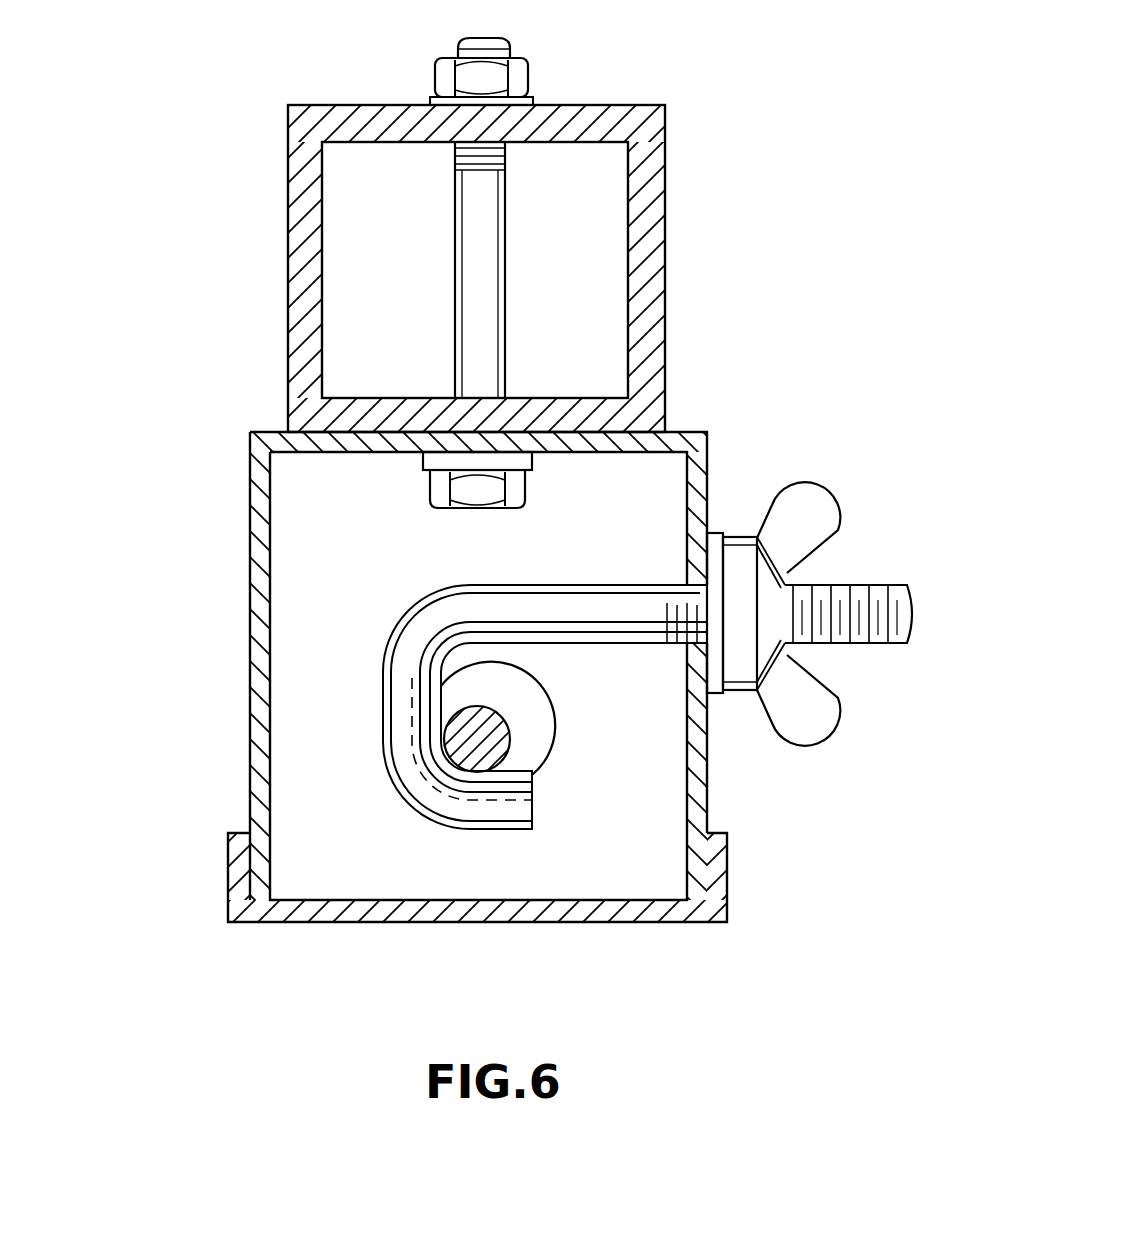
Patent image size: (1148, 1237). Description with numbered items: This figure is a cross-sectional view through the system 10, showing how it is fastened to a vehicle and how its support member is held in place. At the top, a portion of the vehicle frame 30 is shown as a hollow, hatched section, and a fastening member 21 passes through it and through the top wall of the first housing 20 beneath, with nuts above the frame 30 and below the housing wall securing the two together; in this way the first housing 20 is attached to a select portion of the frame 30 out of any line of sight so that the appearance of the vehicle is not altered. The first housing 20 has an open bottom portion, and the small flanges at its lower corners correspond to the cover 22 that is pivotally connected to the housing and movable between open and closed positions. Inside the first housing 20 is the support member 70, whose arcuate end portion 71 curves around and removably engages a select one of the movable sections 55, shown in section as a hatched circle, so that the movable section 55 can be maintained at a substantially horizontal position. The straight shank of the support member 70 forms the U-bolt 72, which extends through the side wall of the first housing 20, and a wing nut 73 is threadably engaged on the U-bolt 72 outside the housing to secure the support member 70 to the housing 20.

The system 10 is at (137, 46).
The first housing 20 is at (247, 447).
The fastening members 21 is at (487, 43).
The cover 22 is at (693, 920).
The frame 30 is at (622, 110).
The movable sections 55 is at (527, 753).
The support member 70 is at (420, 613).
The arcuate end portion 71 is at (393, 768).
The U-bolt 72 is at (861, 643).
The wing nut 73 is at (790, 722).